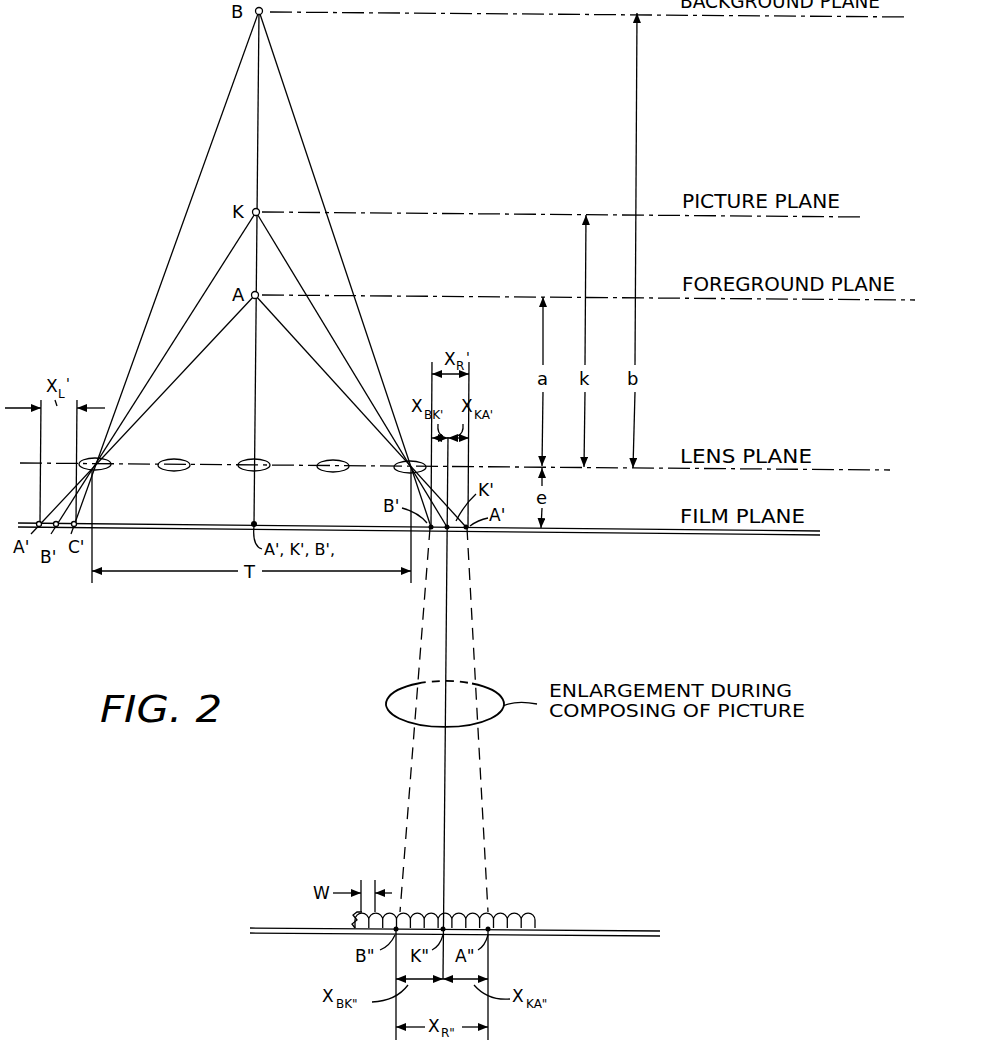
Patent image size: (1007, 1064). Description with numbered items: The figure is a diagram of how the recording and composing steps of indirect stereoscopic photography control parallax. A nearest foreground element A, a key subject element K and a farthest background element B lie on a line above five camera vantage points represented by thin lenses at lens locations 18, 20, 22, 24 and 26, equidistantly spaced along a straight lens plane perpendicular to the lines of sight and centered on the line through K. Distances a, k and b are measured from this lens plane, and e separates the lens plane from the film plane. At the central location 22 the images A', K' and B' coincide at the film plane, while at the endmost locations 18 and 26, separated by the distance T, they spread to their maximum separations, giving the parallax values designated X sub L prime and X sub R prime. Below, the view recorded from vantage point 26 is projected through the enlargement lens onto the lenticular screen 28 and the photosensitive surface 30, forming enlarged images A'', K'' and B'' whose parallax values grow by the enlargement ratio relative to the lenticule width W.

The lens location 18 is at (104, 469).
The lens location 20 is at (176, 459).
The lens location 22 is at (247, 459).
The lens location 24 is at (330, 460).
The lens location 26 is at (398, 462).
The lenticular screen 28 is at (536, 921).
The photosensitive surface 30 is at (633, 930).